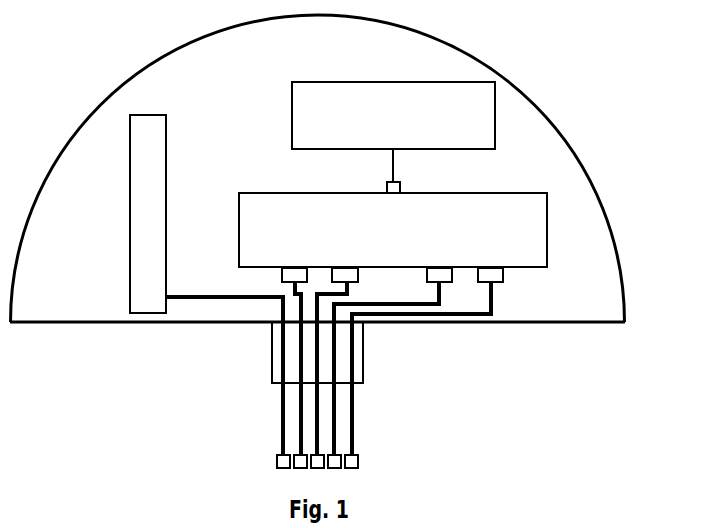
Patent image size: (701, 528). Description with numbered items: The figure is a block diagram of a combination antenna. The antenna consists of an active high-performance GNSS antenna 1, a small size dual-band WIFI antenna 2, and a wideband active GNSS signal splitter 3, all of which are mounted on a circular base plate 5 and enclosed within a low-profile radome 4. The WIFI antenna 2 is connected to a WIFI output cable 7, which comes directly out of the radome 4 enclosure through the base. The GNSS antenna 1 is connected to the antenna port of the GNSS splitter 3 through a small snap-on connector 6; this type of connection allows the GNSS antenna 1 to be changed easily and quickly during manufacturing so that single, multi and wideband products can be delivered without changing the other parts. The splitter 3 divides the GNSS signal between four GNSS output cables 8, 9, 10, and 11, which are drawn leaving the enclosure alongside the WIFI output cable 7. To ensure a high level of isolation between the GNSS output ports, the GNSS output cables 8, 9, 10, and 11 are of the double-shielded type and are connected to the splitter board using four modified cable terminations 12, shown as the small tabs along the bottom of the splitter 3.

The GNSS antenna 1 is at (307, 82).
The WIFI antenna 2 is at (128, 228).
The GNSS signal splitter 3 is at (478, 193).
The radome 4 is at (619, 265).
The base plate 5 is at (603, 323).
The snap-on connector 6 is at (387, 182).
The WIFI output cable 7 is at (281, 363).
The GNSS output cable 8 is at (300, 405).
The GNSS output cable 9 is at (320, 403).
The GNSS output cable 10 is at (338, 373).
The GNSS output cable 11 is at (355, 348).
The cable termination 12 is at (505, 272).